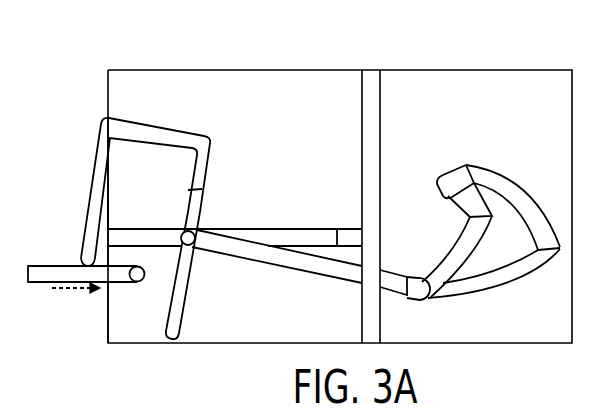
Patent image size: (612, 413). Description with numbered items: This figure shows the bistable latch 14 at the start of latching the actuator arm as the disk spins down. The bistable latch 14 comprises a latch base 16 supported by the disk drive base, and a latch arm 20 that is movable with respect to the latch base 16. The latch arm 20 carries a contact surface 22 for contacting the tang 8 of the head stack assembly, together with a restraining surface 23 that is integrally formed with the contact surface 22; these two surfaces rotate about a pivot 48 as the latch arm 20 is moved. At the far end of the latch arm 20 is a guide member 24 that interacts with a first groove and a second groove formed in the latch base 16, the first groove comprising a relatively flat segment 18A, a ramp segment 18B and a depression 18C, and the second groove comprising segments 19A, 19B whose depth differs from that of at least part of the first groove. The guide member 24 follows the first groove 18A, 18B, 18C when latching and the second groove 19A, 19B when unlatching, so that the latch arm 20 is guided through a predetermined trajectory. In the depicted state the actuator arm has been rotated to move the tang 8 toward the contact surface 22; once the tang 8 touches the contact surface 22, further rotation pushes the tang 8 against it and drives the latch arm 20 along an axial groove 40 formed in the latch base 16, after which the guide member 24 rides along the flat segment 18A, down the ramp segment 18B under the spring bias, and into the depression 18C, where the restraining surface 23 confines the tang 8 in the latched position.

The bistable latch 14 is at (93, 62).
The latch base 16 is at (485, 69).
The latch arm 20 is at (213, 140).
The contact surface 22 is at (167, 313).
The restraining surface 23 is at (109, 224).
The axial groove 40 is at (293, 237).
The pivot 48 is at (195, 247).
The guide member 24 is at (415, 297).
The tang 8 is at (35, 283).
The flat segment 18A is at (461, 258).
The ramp segment 18B is at (471, 198).
The depression 18C is at (453, 181).
The second groove segment 19A is at (509, 193).
The second groove segment 19B is at (523, 267).